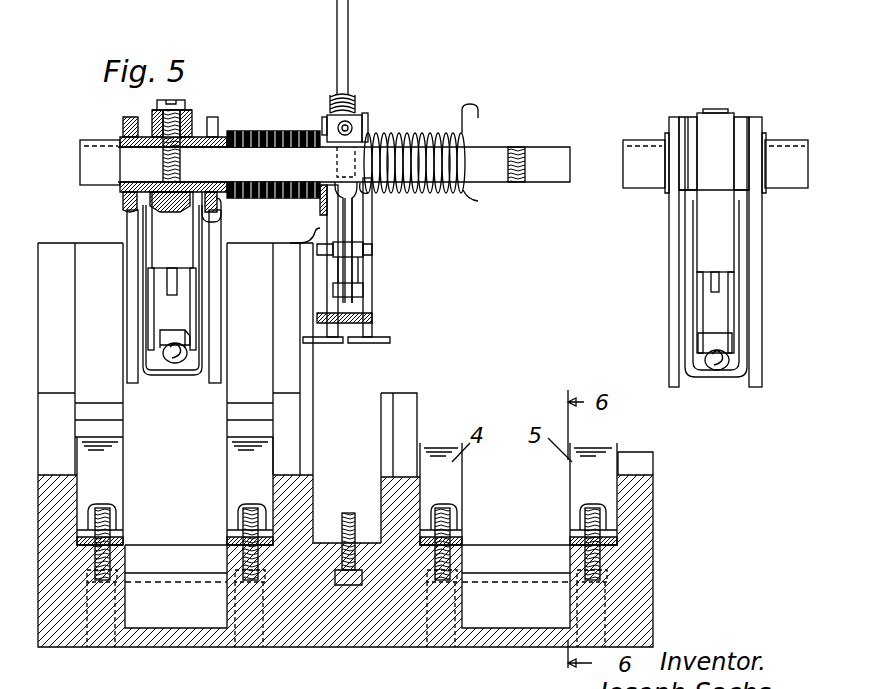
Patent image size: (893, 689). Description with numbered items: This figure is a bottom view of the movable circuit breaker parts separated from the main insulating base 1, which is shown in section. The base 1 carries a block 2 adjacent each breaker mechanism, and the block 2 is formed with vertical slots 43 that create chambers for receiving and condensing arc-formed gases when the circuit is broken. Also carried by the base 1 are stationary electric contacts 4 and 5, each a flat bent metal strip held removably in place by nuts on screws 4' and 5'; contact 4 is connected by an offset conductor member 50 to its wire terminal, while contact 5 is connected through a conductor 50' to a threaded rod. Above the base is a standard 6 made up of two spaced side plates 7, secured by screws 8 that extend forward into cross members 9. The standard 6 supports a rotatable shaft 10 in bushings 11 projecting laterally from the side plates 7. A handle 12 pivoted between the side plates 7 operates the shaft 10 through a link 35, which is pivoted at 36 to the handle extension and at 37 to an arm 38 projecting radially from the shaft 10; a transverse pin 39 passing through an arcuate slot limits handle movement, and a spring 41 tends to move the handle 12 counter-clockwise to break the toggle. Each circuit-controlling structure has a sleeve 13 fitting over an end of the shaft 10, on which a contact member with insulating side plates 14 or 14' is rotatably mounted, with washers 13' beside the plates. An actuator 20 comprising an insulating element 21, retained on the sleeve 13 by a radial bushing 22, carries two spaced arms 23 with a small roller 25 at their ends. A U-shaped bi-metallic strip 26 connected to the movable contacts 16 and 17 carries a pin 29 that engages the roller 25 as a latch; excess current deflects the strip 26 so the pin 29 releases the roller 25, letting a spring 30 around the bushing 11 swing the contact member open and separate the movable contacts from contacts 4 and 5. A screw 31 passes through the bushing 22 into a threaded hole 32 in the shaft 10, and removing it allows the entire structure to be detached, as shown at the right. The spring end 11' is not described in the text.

The main insulating base 1 is at (300, 652).
The block 2 is at (52, 243).
The stationary electric contact 4 is at (227, 542).
The screw 4' is at (456, 545).
The stationary electric contact 5 is at (119, 542).
The screw 5' is at (573, 545).
The standard 6 is at (370, 117).
The side plate 7 is at (328, 226).
The screw 8 is at (350, 513).
The cross member 9 is at (372, 320).
The rotatable shaft 10 is at (548, 150).
The bushing 11 is at (436, 198).
The spring end 11' is at (302, 204).
The handle 12 is at (349, 28).
The sleeve 13 is at (434, 140).
The washer 13' is at (109, 125).
The side plate 14 is at (719, 252).
The side plate 14' is at (175, 287).
The movable contact 16 is at (640, 142).
The movable contact 17 is at (80, 157).
The actuator 20 is at (130, 200).
The insulating element 21 is at (443, 202).
The radial bushing 22 is at (156, 112).
The arm 23 is at (194, 266).
The roller 25 is at (170, 333).
The bi-metallic strip 26 is at (728, 374).
The pin 29 is at (175, 363).
The spring 30 is at (240, 137).
The screw 31 is at (183, 102).
The threaded hole 32 is at (517, 147).
The link 35 is at (355, 278).
The pivot 36 is at (365, 250).
The pivot 37 is at (365, 290).
The arm 38 is at (352, 230).
The transverse pin 39 is at (312, 236).
The spring 41 is at (356, 100).
The vertical slot 43 is at (122, 437).
The offset conductor member 50 is at (464, 531).
The conductor 50' is at (568, 535).